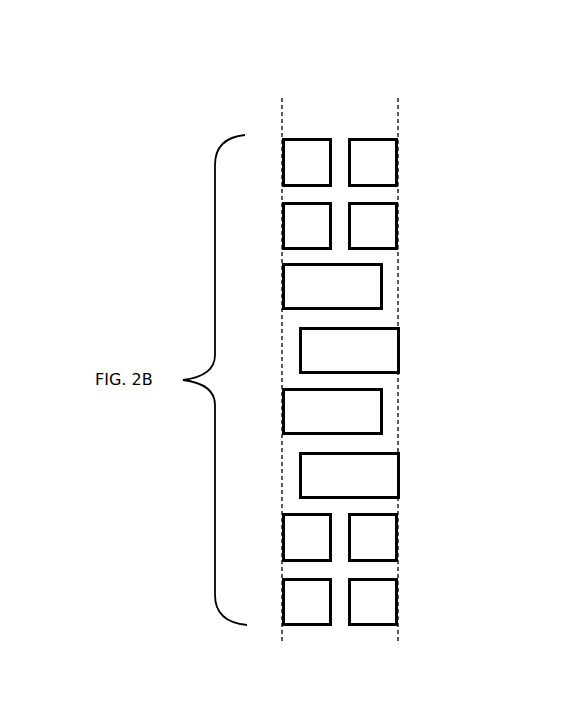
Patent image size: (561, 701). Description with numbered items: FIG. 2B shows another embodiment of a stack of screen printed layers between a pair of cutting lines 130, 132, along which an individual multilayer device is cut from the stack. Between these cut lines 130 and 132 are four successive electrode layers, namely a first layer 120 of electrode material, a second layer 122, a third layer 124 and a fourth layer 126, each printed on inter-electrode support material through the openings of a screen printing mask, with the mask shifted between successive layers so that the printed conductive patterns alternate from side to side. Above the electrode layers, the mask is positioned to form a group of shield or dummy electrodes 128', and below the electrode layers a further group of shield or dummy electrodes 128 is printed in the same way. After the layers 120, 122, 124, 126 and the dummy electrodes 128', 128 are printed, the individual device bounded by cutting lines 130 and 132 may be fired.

The cutting line 130 is at (281, 97).
The cutting line 132 is at (398, 97).
The upper group of four electrode pads 128' is at (412, 192).
The first layer of electrode material 120 is at (415, 275).
The second layer of electrode material 122 is at (417, 344).
The third layer 124 is at (417, 409).
The fourth layer 126 is at (417, 473).
The shield or dummy electrodes 128 is at (413, 570).